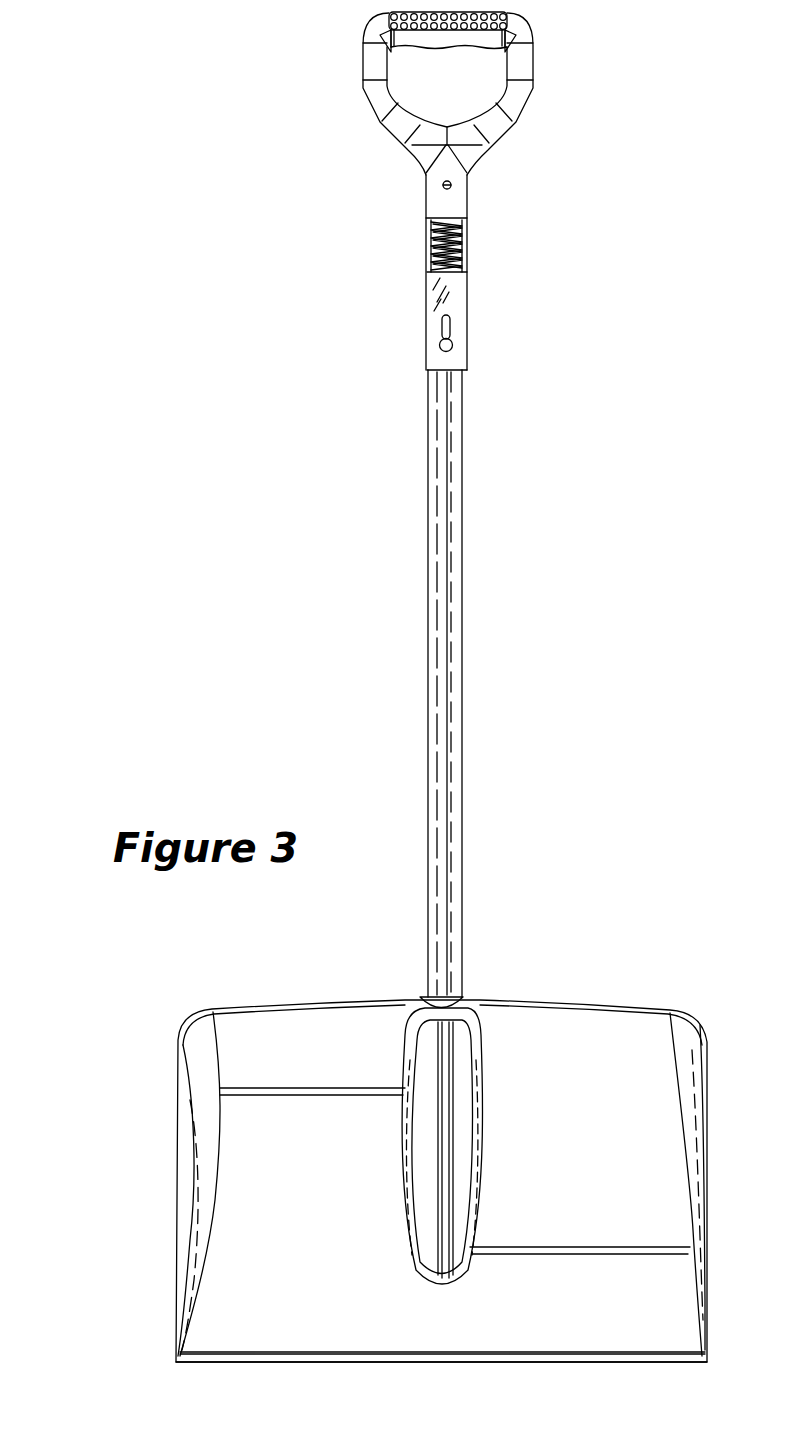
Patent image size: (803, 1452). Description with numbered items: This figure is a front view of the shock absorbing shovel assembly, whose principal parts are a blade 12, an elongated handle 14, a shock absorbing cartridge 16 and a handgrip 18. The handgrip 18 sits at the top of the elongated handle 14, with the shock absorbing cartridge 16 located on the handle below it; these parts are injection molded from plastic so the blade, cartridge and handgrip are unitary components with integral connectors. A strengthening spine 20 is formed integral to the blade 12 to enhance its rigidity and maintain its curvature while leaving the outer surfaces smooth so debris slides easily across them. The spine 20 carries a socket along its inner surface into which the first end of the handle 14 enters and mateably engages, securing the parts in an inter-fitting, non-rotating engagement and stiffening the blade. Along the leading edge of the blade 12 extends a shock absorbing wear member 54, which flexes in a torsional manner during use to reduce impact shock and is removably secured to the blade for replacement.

The blade 12 is at (342, 998).
The elongated handle 14 is at (460, 662).
The shock absorbing cartridge 16 is at (462, 288).
The handgrip 18 is at (533, 98).
The strengthening spine 20 is at (455, 1043).
The shock absorbing wear member 54 is at (173, 1362).